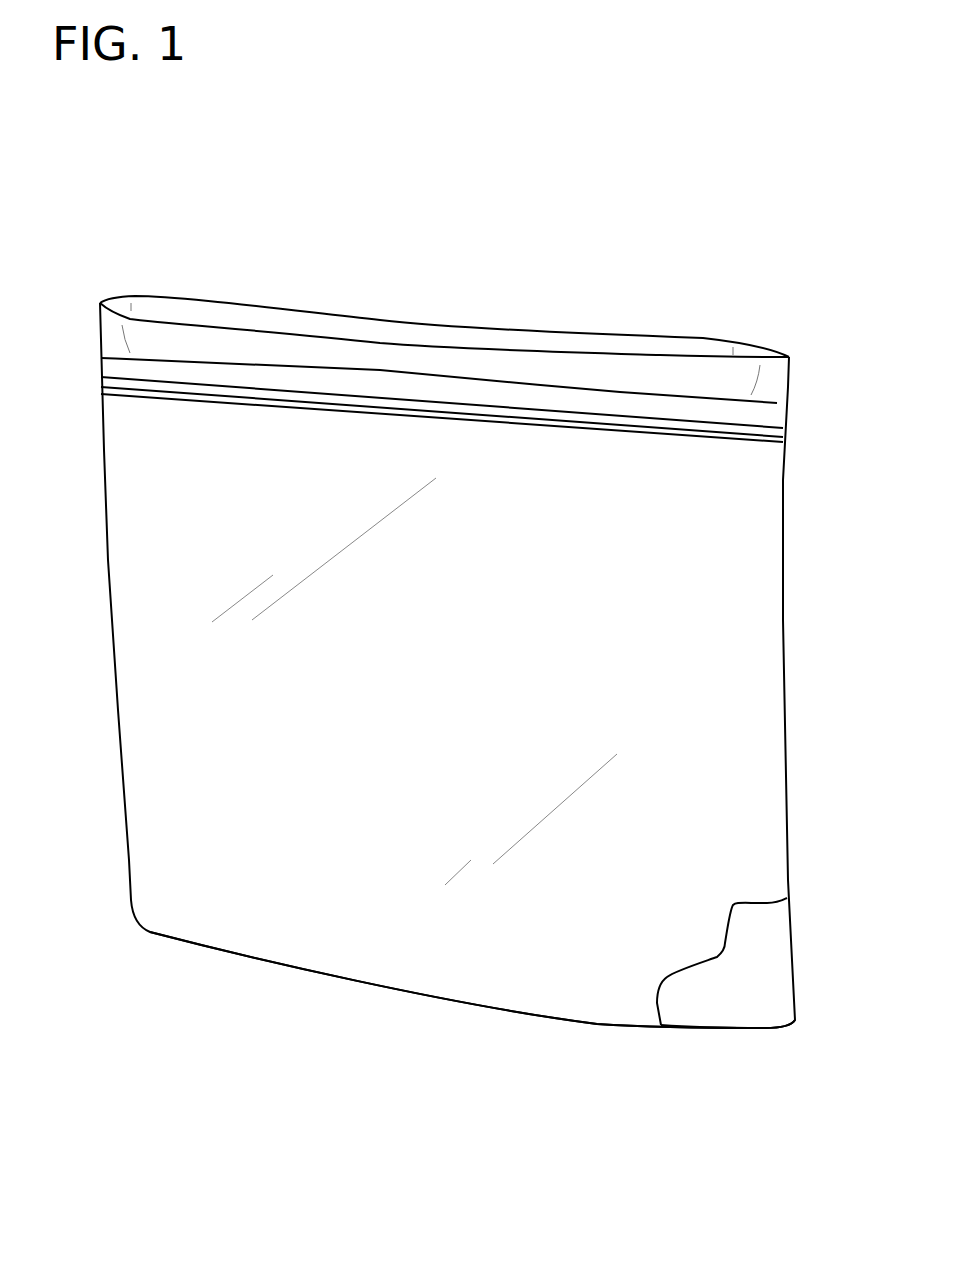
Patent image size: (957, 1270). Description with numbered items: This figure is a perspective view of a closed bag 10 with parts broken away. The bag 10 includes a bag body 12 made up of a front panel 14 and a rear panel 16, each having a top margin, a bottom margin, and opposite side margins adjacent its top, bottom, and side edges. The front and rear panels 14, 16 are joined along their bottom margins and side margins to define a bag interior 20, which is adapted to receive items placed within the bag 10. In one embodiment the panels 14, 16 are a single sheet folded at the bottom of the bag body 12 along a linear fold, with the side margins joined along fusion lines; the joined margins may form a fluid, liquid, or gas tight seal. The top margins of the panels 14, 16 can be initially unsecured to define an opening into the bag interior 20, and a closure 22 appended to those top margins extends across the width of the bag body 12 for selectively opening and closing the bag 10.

The bag 10 is at (160, 1078).
The bag body 12 is at (597, 1025).
The front panel 14 is at (368, 966).
The rear panel 16 is at (713, 1002).
The bag interior 20 is at (745, 968).
The closure 22 is at (609, 329).